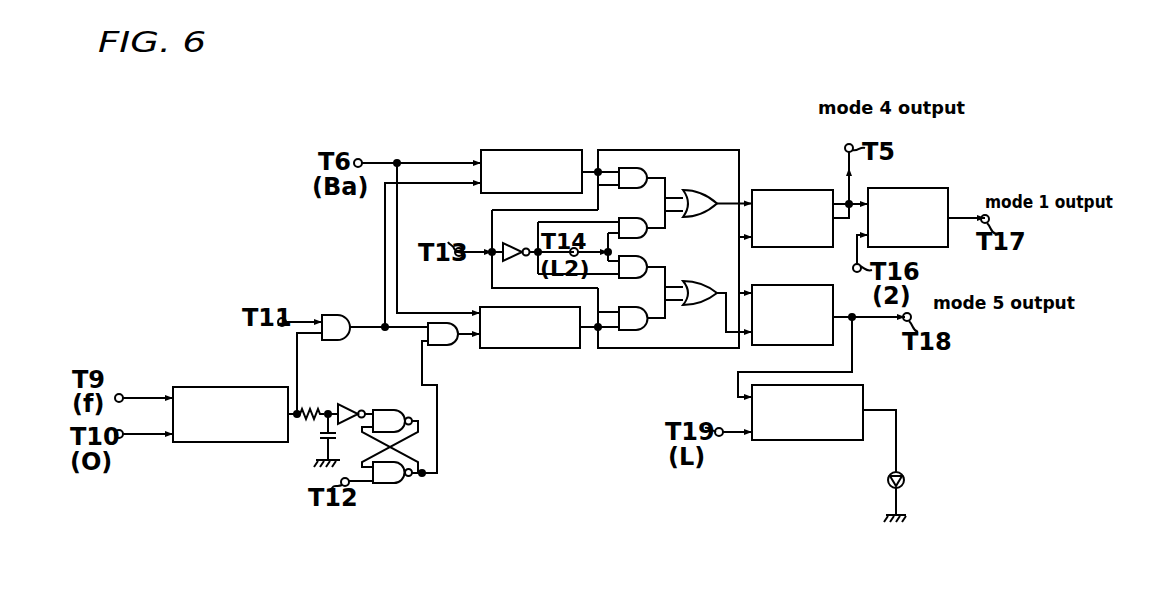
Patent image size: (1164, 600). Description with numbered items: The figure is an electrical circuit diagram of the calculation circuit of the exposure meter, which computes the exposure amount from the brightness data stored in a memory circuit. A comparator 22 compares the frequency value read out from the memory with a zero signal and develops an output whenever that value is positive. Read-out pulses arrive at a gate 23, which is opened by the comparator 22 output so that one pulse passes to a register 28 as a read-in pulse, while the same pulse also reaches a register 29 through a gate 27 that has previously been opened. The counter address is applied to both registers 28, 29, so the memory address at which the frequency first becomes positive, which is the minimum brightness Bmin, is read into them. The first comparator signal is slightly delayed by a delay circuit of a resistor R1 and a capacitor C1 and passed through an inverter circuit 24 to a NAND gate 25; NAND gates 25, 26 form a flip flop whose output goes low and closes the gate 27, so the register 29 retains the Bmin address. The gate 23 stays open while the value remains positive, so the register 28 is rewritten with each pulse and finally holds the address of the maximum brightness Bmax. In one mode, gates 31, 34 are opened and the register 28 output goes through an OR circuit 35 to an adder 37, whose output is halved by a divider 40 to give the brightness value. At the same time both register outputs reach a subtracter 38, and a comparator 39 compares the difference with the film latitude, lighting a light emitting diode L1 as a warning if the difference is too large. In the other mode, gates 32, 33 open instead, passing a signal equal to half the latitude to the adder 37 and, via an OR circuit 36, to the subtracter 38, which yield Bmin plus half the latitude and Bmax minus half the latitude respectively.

The comparator 22 is at (215, 387).
The gate 23 is at (340, 315).
The inverter circuit 24 is at (348, 404).
The NAND gate 25 is at (398, 410).
The NAND gate 26 is at (390, 483).
The gate 27 is at (448, 345).
The register 28 is at (535, 150).
The register 29 is at (548, 348).
The gate 31 is at (637, 168).
The gate 32 is at (633, 218).
The gate 33 is at (641, 256).
The gate 34 is at (648, 326).
The OR circuit 35 is at (700, 191).
The OR circuit 36 is at (707, 282).
The adder 37 is at (783, 190).
The subtracter 38 is at (795, 285).
The comparator 39 is at (790, 440).
The divider 40 is at (930, 188).
The resistor R1 is at (316, 396).
The capacitor C1 is at (322, 440).
The light emitting diode L1 is at (904, 480).